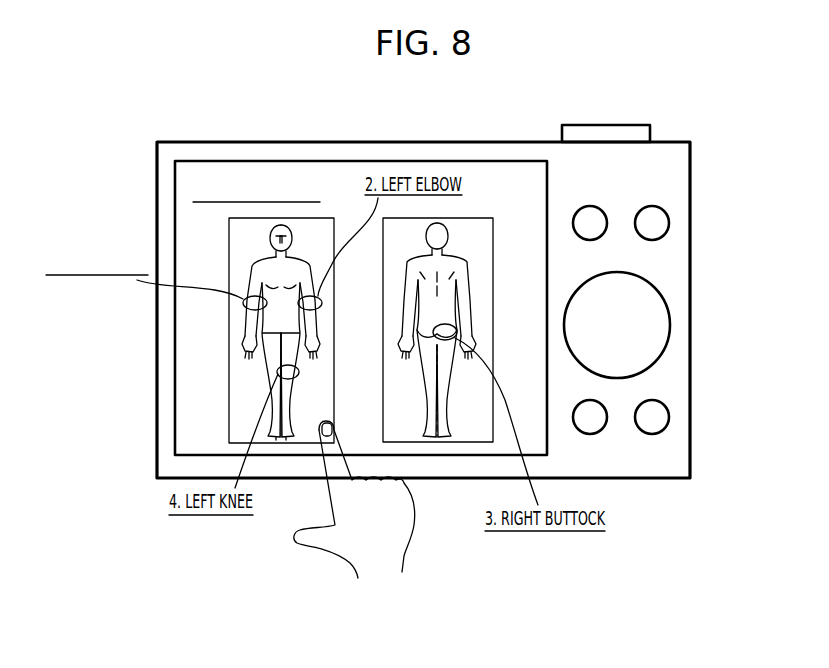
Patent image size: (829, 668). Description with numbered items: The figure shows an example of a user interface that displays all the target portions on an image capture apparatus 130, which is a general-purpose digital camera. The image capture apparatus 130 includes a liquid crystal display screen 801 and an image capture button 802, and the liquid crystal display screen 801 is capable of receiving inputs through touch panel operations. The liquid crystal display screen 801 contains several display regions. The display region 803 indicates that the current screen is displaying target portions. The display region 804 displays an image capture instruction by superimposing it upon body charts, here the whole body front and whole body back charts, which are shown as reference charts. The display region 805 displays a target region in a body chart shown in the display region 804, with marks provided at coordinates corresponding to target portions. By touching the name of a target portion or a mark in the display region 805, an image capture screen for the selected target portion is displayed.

The image capture apparatus 130 is at (183, 142).
The liquid crystal display screen 801 is at (230, 161).
The image capture button 802 is at (630, 125).
The display region 803 is at (190, 187).
The display region 804 is at (229, 340).
The display region 805 is at (98, 248).